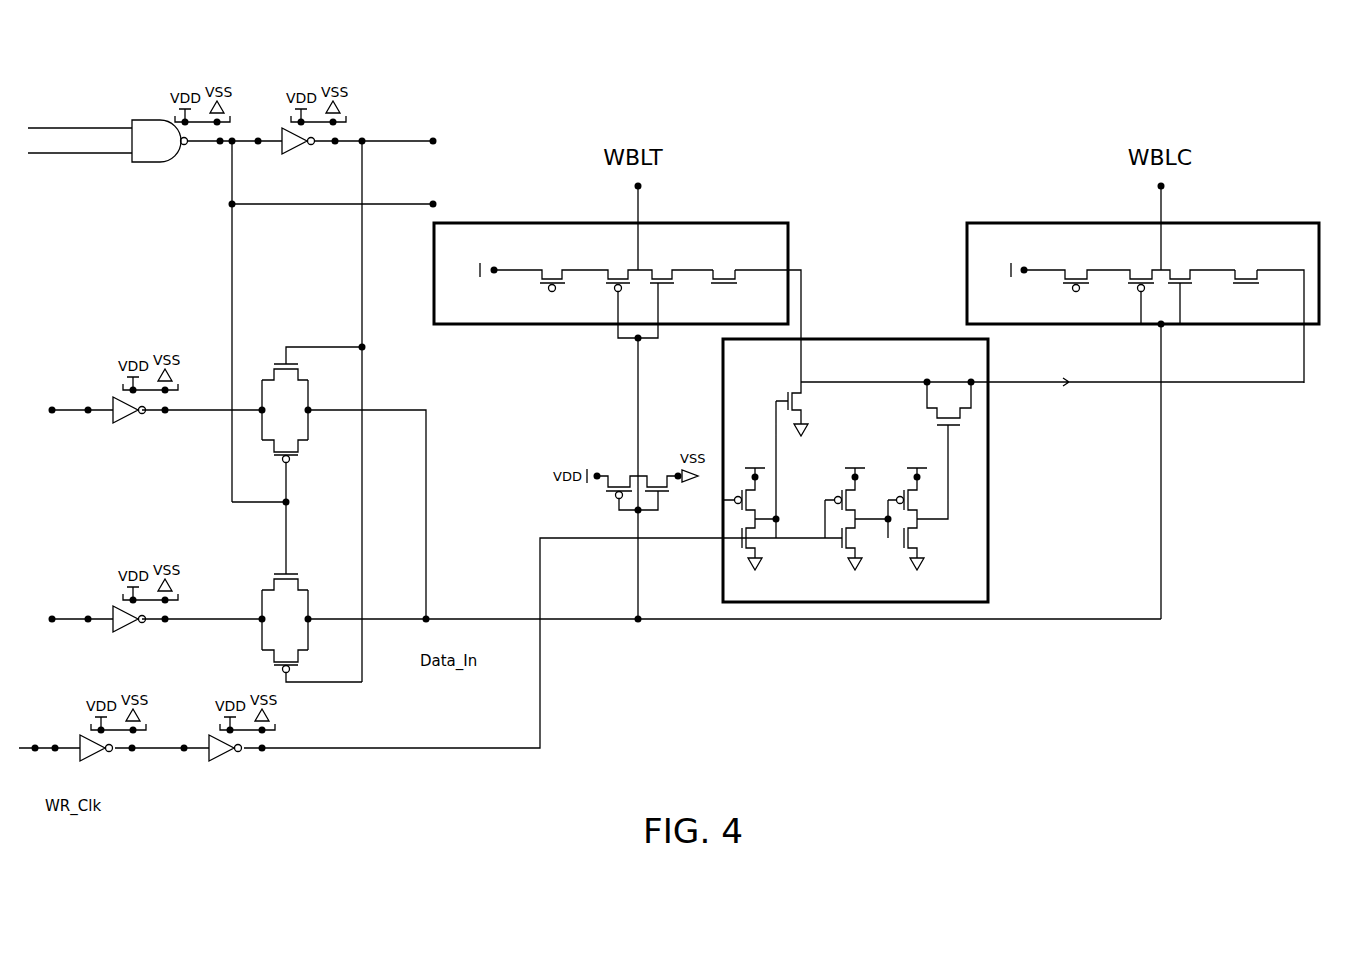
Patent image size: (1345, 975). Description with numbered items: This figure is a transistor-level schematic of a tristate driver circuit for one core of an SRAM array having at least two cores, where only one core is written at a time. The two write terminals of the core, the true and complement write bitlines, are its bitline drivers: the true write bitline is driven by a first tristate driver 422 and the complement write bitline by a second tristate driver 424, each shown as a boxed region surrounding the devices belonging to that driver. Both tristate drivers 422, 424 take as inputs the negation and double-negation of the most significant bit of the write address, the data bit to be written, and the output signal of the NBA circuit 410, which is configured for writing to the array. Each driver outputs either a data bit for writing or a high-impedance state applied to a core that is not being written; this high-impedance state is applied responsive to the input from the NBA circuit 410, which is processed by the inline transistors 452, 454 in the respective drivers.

The NBA circuit 410 is at (988, 548).
The first tristate driver 422 is at (535, 223).
The second tristate driver 424 is at (1057, 223).
The inline transistor 452 is at (722, 270).
The inline transistor 454 is at (1245, 270).